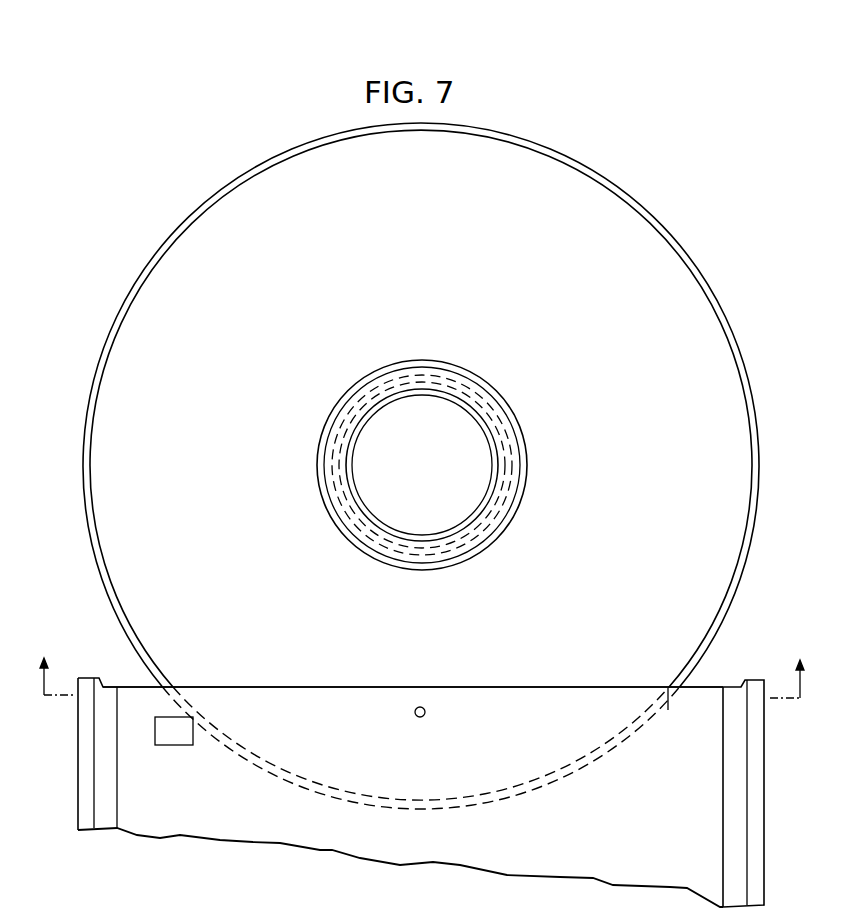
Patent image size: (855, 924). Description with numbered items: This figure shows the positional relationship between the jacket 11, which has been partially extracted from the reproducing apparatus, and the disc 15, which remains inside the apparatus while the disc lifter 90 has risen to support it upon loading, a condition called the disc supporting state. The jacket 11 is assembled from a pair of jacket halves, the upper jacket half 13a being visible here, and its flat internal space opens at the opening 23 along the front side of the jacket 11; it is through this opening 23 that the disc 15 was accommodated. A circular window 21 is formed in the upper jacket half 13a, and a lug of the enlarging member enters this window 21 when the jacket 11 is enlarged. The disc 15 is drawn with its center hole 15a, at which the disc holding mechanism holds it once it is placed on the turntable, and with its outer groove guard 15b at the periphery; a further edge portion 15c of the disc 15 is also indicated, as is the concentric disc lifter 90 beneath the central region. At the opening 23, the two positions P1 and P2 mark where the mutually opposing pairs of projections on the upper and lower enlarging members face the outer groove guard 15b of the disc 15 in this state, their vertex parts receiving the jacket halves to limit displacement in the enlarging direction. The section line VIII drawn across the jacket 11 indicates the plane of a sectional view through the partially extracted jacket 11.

The disc 15 is at (440, 466).
The center hole 15a is at (484, 425).
The outer groove guard 15b is at (743, 360).
The disc inner peripheral edge 15c is at (722, 568).
The disc lifter 90 is at (508, 466).
The jacket 11 is at (764, 802).
The upper jacket half 13a is at (304, 698).
The opening 23 is at (500, 690).
The circular window 21 is at (414, 713).
The position P1 is at (173, 687).
The position P2 is at (672, 713).
The section line VIII is at (421, 669).